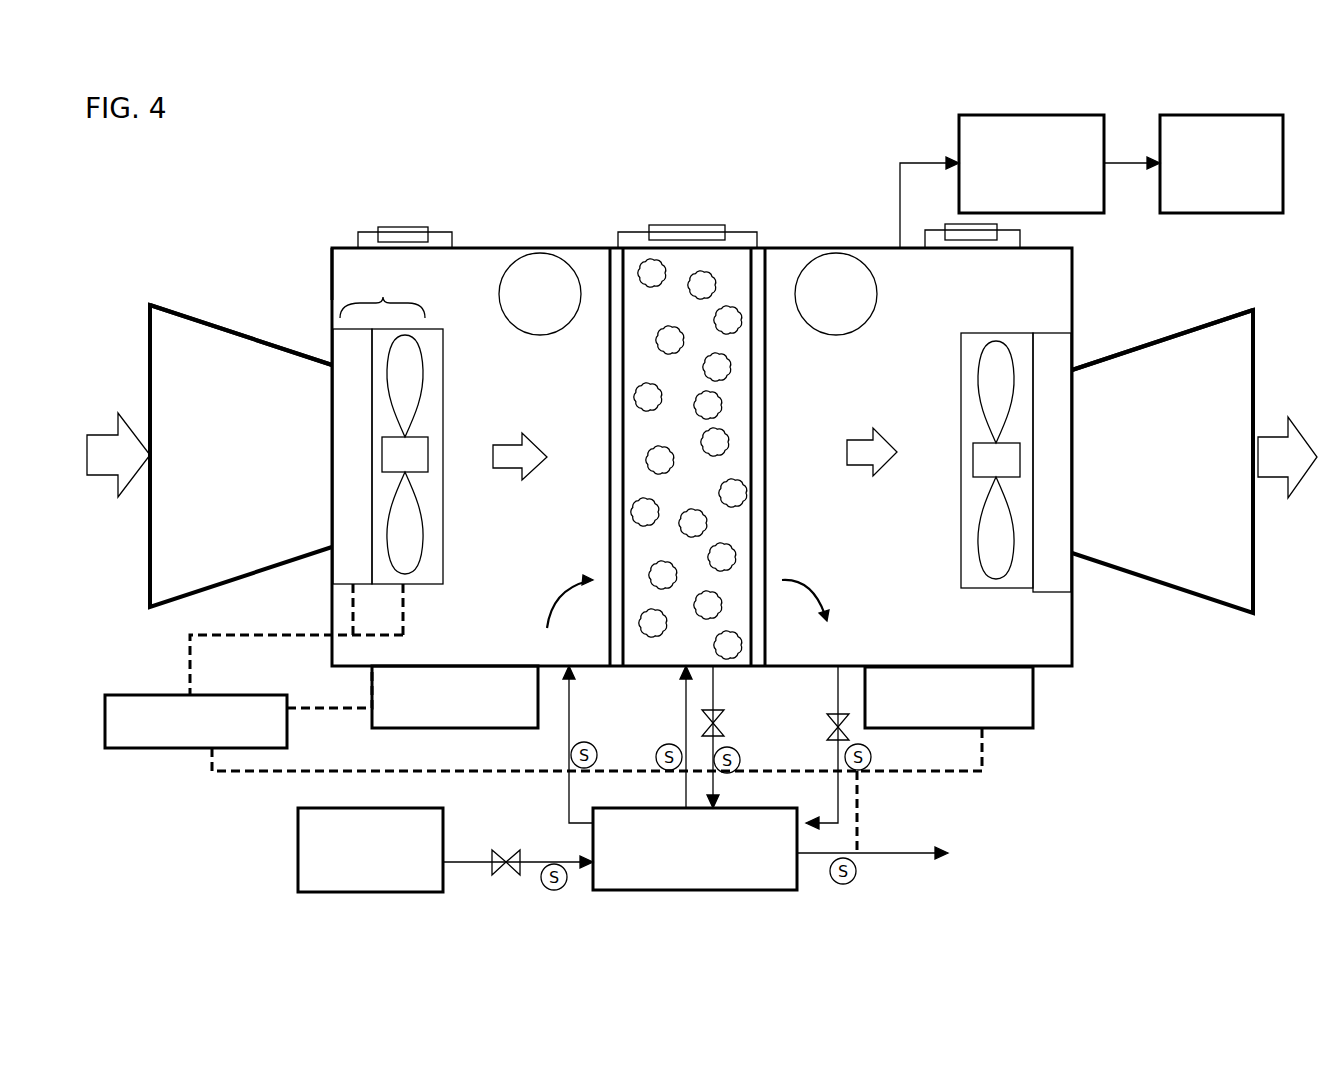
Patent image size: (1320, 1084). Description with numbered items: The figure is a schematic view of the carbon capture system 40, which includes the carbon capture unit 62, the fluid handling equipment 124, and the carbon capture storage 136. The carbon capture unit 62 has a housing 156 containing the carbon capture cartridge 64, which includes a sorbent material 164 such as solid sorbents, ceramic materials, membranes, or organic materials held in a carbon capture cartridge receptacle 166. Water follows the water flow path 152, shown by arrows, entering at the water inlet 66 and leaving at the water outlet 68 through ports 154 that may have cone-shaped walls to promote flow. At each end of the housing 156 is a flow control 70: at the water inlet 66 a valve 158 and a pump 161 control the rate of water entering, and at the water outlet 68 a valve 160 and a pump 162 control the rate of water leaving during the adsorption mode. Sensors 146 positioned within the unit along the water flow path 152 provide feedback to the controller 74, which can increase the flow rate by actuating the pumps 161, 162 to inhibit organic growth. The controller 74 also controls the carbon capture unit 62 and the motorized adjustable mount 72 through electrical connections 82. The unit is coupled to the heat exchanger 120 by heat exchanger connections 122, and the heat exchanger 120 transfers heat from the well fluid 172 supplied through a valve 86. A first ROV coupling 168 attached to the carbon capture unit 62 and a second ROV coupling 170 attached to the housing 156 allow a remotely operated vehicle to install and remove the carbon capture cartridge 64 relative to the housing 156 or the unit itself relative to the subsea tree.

The carbon capture system 40 is at (378, 128).
The carbon capture unit 62 is at (569, 247).
The carbon capture cartridge 64 is at (622, 437).
The water inlet 66 is at (149, 370).
The water outlet 68 is at (1254, 383).
The flow control 70 is at (391, 424).
The adjustable mount 72 is at (407, 729).
The controller 74 is at (115, 694).
The electrical connections 82 is at (275, 640).
The valve 86 is at (499, 878).
The heat exchanger 120 is at (738, 892).
The heat exchanger connection 122 is at (567, 722).
The fluid handling equipment 124 is at (993, 114).
The carbon capture storage 136 is at (1222, 114).
The sensor 146 is at (499, 290).
The water flow path 152 is at (115, 478).
The port 154 is at (251, 333).
The housing 156 is at (331, 247).
The valve 158 is at (332, 572).
The valve 160 is at (1038, 333).
The pump 161 is at (446, 359).
The pump 162 is at (985, 333).
The sorbent material 164 is at (664, 388).
The carbon capture cartridge receptacle 166 is at (610, 494).
The first ROV coupling 168 is at (640, 230).
The second ROV coupling 170 is at (405, 227).
The well fluid 172 is at (343, 893).